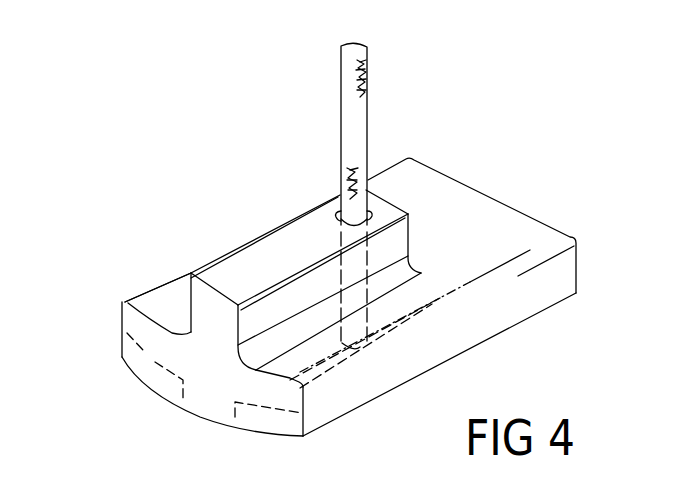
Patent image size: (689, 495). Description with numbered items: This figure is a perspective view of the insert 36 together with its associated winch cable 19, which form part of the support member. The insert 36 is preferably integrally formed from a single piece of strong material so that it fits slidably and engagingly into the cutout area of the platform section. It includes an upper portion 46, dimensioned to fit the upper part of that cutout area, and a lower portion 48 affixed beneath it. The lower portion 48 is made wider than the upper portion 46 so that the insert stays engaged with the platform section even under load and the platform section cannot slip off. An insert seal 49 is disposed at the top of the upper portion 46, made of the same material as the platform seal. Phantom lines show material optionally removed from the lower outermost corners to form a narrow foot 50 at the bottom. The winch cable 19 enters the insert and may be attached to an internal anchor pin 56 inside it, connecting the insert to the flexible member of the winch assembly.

The winch cable 19 is at (367, 88).
The insert 36 is at (300, 250).
The insert seal 49 is at (250, 260).
The upper portion 46 is at (190, 300).
The lower portion 48 is at (138, 328).
The narrow foot 50 is at (207, 412).
The internal anchor pin 56 is at (413, 321).